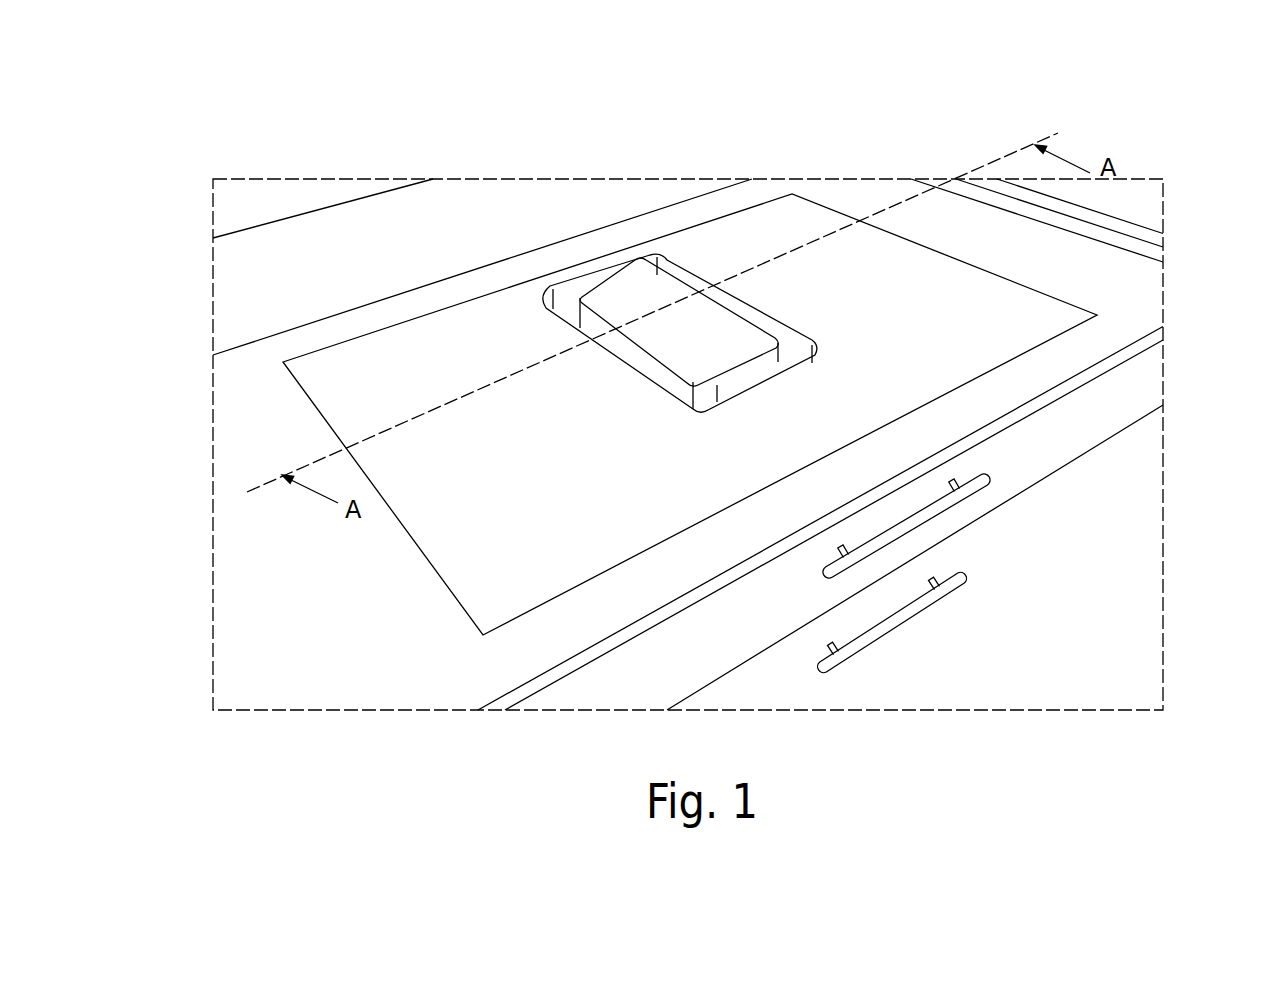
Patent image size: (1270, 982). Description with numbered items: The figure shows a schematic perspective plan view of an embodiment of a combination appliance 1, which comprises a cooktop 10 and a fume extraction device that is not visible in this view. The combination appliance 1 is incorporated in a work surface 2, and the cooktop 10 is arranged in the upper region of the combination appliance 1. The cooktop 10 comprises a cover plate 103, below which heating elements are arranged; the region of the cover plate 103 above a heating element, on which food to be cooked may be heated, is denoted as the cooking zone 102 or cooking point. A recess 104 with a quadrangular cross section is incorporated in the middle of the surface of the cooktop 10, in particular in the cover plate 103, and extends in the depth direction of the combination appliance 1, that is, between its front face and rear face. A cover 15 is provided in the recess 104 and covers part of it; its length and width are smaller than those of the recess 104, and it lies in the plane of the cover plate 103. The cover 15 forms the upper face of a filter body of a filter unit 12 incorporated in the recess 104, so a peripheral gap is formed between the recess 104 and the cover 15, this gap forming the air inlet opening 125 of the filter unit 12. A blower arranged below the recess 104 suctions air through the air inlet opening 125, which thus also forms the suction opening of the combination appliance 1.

The combination appliance 1 is at (929, 118).
The work surface 2 is at (256, 596).
The cooktop 10 is at (1122, 308).
The filter unit 12 is at (677, 330).
The cover 15 is at (664, 330).
The cooking zone 102 is at (510, 400).
The cover plate 103 is at (947, 362).
The recess 104 is at (683, 270).
The air inlet opening 125 is at (618, 338).